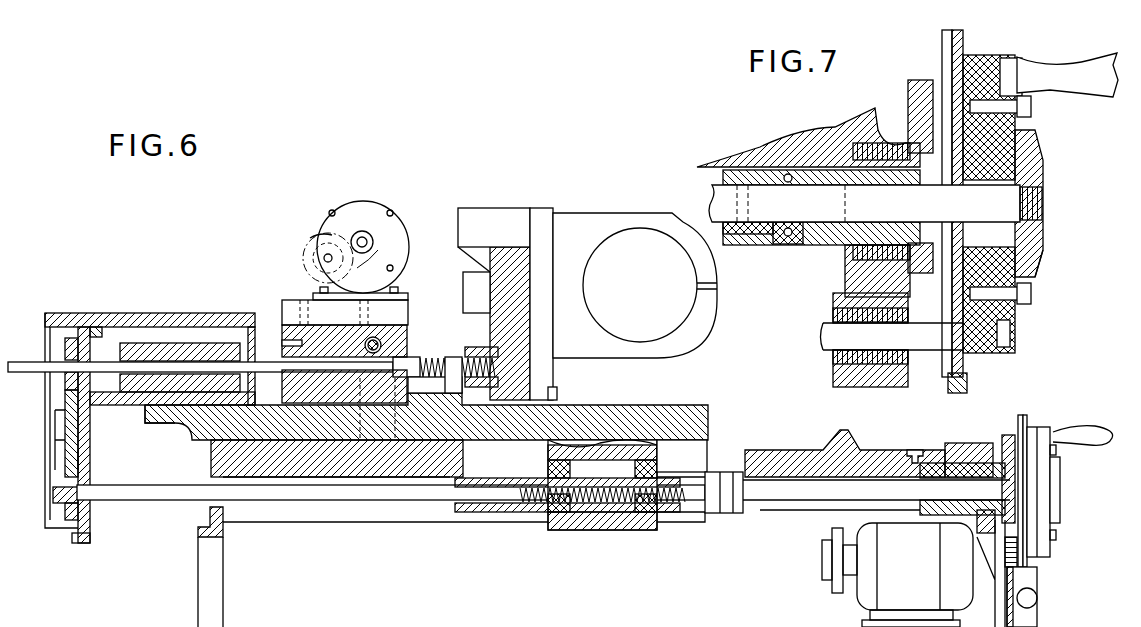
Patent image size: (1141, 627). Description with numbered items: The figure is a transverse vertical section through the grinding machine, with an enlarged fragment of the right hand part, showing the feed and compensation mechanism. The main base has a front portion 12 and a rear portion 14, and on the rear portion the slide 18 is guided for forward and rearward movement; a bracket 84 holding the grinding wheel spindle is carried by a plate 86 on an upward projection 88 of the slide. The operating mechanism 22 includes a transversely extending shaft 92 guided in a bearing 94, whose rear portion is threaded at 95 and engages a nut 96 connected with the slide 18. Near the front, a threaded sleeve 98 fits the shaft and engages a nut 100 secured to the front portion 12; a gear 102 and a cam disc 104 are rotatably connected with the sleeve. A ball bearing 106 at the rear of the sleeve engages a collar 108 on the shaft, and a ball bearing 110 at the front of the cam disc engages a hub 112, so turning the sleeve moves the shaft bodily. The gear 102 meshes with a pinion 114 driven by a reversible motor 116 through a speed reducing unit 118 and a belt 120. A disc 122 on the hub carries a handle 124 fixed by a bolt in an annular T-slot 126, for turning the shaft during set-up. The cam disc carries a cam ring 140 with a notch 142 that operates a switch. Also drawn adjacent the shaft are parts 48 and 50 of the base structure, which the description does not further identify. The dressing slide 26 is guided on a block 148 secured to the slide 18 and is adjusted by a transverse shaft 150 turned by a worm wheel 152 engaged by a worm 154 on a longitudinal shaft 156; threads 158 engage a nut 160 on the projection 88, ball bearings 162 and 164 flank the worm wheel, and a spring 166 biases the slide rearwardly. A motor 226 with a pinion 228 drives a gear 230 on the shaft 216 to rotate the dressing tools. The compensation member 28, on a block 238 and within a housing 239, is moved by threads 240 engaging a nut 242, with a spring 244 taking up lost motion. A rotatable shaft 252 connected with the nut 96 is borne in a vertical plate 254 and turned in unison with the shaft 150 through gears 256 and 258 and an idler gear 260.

In FIG. 7, the front portion 12 is at (878, 130).
In FIG. 6, the rear portion 14 is at (211, 460).
In FIG. 6, the slide 18 is at (648, 412).
In FIG. 6, the operating mechanism 22 is at (993, 434).
In FIG. 6, the slide 26 is at (408, 318).
In FIG. 6, the compensation member 28 is at (132, 340).
In FIG. 6, the arm 48 is at (845, 435).
In FIG. 6, the arm block 50 is at (960, 443).
In FIG. 6, the bracket 84 is at (592, 224).
In FIG. 6, the plate 86 is at (543, 213).
In FIG. 6, the upward projection 88 is at (490, 265).
In FIG. 6, the shaft 92 is at (832, 500).
In FIG. 7, the shaft 92 is at (722, 200).
In FIG. 6, the bearing 94 is at (713, 513).
In FIG. 6, the threaded portion 95 is at (670, 512).
In FIG. 6, the nut 96 is at (590, 530).
In FIG. 7, the sleeve 98 is at (835, 160).
In FIG. 7, the nut 100 is at (852, 165).
In FIG. 6, the gear 102 is at (1008, 433).
In FIG. 7, the gear 102 is at (913, 78).
In FIG. 6, the cam disc 104 is at (1021, 415).
In FIG. 7, the cam disc 104 is at (946, 75).
In FIG. 6, the ball bearing 106 is at (947, 470).
In FIG. 7, the ball bearing 106 is at (790, 245).
In FIG. 6, the collar 108 is at (930, 515).
In FIG. 7, the collar 108 is at (757, 235).
In FIG. 7, the ball bearing 110 is at (1030, 222).
In FIG. 7, the hub 112 is at (1040, 252).
In FIG. 6, the pinion 114 is at (1018, 545).
In FIG. 7, the pinion 114 is at (925, 370).
In FIG. 6, the reversible motor 116 is at (880, 530).
In FIG. 6, the speed reducing unit 118 is at (978, 532).
In FIG. 6, the belt 120 is at (832, 545).
In FIG. 7, the disc 122 is at (995, 55).
In FIG. 6, the handle 124 is at (1090, 432).
In FIG. 7, the handle 124 is at (1087, 60).
In FIG. 7, the T-slot 126 is at (1010, 58).
In FIG. 6, the cam ring 140 is at (1027, 418).
In FIG. 7, the cam ring 140 is at (963, 38).
In FIG. 7, the notch 142 is at (968, 383).
In FIG. 6, the block 148 is at (290, 394).
In FIG. 6, the transverse shaft 150 is at (426, 364).
In FIG. 6, the worm wheel 152 is at (408, 335).
In FIG. 6, the worm 154 is at (380, 340).
In FIG. 6, the longitudinal shaft 156 is at (285, 342).
In FIG. 6, the threads 158 is at (452, 352).
In FIG. 6, the nut 160 is at (485, 357).
In FIG. 6, the ball bearing 162 is at (362, 400).
In FIG. 6, the ball bearing 164 is at (398, 400).
In FIG. 6, the spring 166 is at (440, 371).
In FIG. 6, the shaft 216 is at (325, 258).
In FIG. 6, the motor 226 is at (405, 237).
In FIG. 6, the pinion 228 is at (368, 238).
In FIG. 6, the gear 230 is at (340, 245).
In FIG. 6, the block 238 is at (134, 405).
In FIG. 6, the housing 239 is at (80, 313).
In FIG. 6, the threads 240 is at (195, 353).
In FIG. 6, the nut 242 is at (214, 342).
In FIG. 6, the spring 244 is at (100, 352).
In FIG. 6, the rotatable shaft 252 is at (278, 500).
In FIG. 6, the vertical plate 254 is at (88, 458).
In FIG. 6, the gear 256 is at (65, 345).
In FIG. 6, the gear 258 is at (56, 507).
In FIG. 6, the idler gear 260 is at (65, 448).